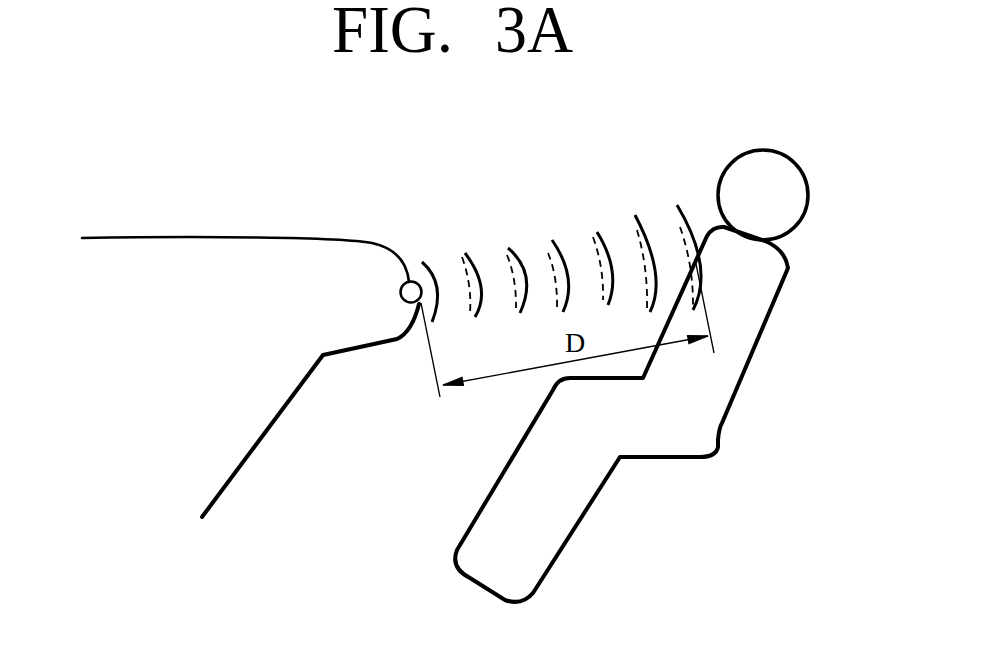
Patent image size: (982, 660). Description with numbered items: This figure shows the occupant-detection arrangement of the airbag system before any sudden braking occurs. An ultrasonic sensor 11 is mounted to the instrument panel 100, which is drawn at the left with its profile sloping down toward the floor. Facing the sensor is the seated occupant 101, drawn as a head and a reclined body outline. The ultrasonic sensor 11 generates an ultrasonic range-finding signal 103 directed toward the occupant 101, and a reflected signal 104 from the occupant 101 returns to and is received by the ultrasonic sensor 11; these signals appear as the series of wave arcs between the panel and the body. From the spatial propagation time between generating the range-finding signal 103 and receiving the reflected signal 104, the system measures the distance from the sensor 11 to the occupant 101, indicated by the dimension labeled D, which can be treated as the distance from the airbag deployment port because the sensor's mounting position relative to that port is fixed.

The instrument panel 100 is at (308, 237).
The ultrasonic sensor 11 is at (407, 277).
The reflected signal 104 is at (547, 250).
The ultrasonic range-finding signal 103 is at (678, 204).
The occupant 101 is at (733, 375).